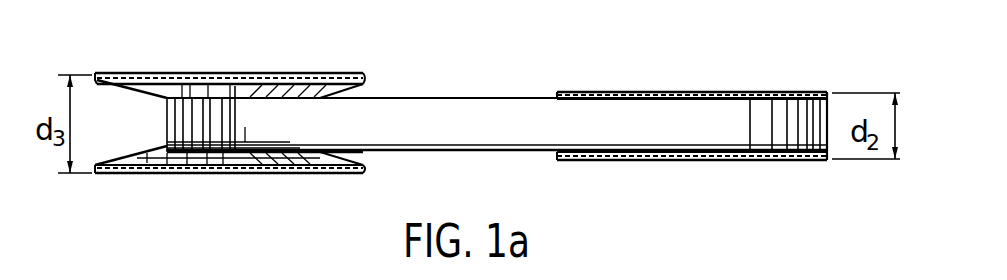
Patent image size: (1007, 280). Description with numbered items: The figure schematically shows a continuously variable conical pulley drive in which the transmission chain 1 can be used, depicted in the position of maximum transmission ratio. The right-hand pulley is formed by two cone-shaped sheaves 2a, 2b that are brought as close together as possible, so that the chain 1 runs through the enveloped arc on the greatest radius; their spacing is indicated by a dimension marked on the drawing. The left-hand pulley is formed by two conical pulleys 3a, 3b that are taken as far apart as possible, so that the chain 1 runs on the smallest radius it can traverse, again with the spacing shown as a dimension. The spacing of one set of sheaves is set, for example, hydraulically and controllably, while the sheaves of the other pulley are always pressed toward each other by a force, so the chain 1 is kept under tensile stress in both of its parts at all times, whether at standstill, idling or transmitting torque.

The chain 1 is at (434, 95).
The cone-shaped sheave 2a is at (657, 92).
The cone-shaped sheave 2b is at (678, 162).
The conical pulley 3a is at (207, 73).
The conical pulley 3b is at (230, 174).